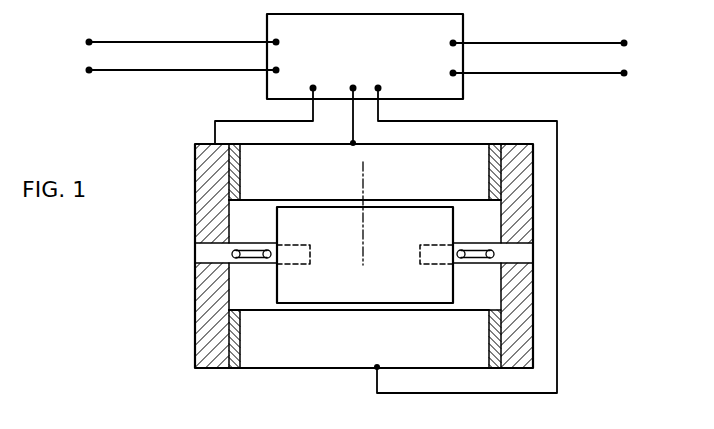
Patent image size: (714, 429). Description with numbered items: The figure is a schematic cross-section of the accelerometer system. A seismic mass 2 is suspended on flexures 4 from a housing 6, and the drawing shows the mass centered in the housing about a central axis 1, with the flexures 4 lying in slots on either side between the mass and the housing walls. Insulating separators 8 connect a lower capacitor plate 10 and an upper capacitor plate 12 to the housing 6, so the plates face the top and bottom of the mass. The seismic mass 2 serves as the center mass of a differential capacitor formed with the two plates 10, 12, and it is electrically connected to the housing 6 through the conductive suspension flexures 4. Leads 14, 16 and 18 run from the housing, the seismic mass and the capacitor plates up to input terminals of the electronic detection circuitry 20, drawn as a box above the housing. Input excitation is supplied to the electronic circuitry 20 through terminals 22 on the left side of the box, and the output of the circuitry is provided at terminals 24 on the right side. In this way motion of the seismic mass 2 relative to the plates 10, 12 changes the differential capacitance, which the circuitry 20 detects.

The center line / axis 1 is at (361, 186).
The seismic mass 2 is at (396, 288).
The flexures 4 is at (479, 248).
The housing 6 is at (203, 294).
The insulating separators 8 is at (233, 368).
The capacitor plate 10 is at (413, 348).
The capacitor plate 12 is at (412, 180).
The lead 14 is at (252, 120).
The lead 16 is at (352, 131).
The lead 18 is at (481, 121).
The electronic detection circuitry 20 is at (377, 61).
The terminals 22 is at (165, 56).
The terminals 24 is at (553, 58).